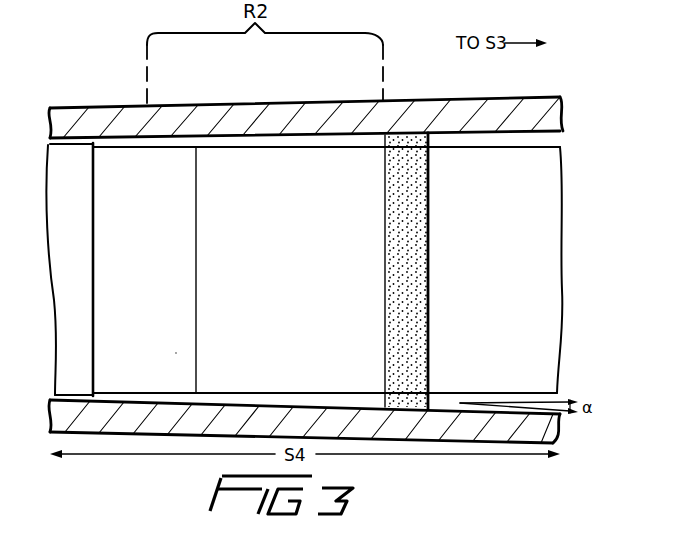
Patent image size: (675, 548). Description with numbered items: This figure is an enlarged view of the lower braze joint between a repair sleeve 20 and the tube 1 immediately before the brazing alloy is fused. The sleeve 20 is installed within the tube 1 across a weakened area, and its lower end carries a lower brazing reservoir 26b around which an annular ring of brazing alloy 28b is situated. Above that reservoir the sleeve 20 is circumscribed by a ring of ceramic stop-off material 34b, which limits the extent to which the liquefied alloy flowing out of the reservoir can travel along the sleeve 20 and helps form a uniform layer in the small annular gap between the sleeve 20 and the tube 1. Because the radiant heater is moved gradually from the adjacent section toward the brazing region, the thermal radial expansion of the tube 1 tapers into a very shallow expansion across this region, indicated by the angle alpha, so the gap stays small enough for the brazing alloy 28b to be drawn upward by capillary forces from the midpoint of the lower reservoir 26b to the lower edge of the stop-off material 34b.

The tube 1 is at (80, 107).
The sleeve 20 is at (297, 283).
The lower brazing reservoir 26b is at (199, 158).
The brazing alloy 28b is at (176, 353).
The ring of ceramic stop-off material 34b is at (405, 323).